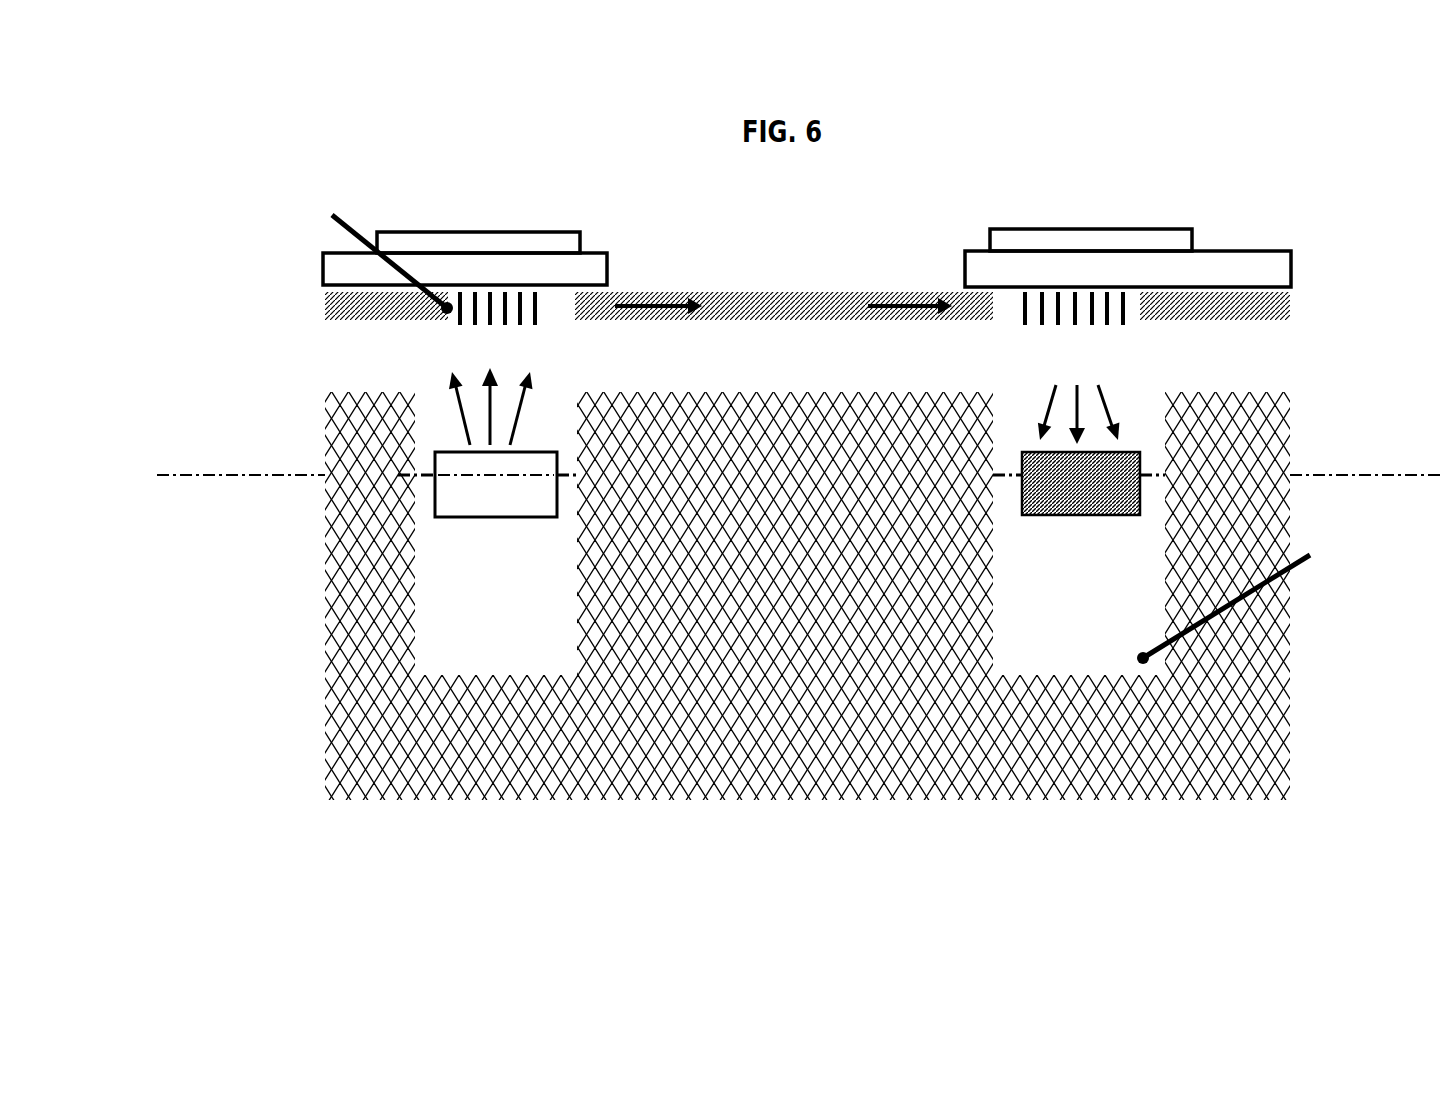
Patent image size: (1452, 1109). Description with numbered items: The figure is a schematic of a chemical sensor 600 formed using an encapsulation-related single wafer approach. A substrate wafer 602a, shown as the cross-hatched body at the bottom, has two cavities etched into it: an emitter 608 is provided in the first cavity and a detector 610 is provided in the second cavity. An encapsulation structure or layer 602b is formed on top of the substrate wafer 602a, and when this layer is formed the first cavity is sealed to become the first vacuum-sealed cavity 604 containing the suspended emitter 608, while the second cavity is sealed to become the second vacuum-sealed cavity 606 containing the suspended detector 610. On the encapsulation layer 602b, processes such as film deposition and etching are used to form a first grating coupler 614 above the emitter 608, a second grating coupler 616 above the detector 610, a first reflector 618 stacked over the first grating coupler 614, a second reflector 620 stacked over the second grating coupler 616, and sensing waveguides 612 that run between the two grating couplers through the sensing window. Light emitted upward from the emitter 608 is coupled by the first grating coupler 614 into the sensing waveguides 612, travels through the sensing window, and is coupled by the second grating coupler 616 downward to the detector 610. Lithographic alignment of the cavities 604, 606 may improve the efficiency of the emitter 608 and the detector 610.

The chemical sensor 600 is at (767, 503).
The substrate wafer 602a is at (888, 765).
The encapsulation structure or layer 602b is at (1232, 360).
The first vacuum-sealed cavity 604 is at (477, 665).
The second vacuum-sealed cavity 606 is at (1088, 660).
The emitter 608 is at (470, 495).
The detector 610 is at (1113, 473).
The sensing waveguides 612 is at (943, 298).
The first grating coupler 614 is at (470, 298).
The second grating coupler 616 is at (1115, 298).
The first reflector 618 is at (572, 232).
The second reflector 620 is at (1041, 232).